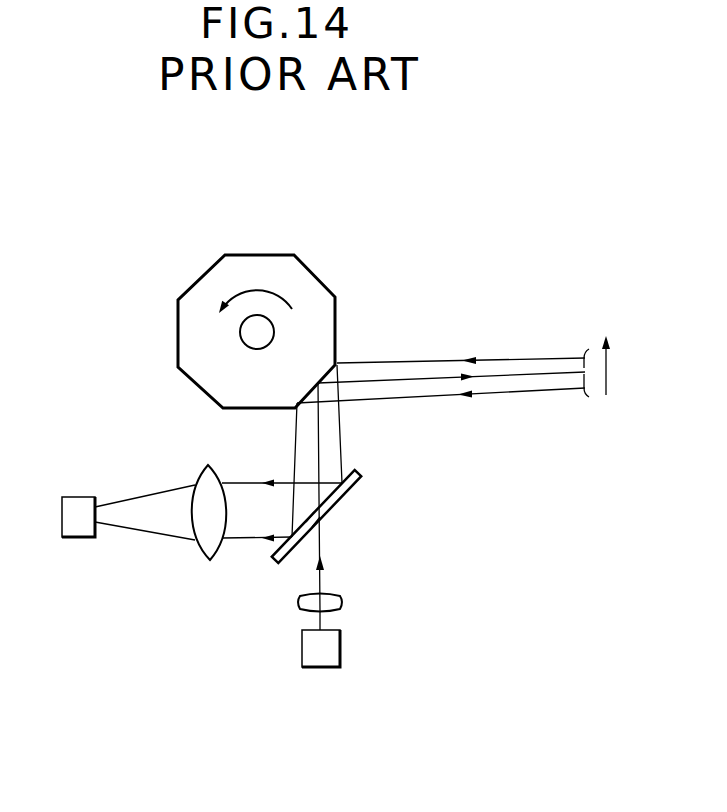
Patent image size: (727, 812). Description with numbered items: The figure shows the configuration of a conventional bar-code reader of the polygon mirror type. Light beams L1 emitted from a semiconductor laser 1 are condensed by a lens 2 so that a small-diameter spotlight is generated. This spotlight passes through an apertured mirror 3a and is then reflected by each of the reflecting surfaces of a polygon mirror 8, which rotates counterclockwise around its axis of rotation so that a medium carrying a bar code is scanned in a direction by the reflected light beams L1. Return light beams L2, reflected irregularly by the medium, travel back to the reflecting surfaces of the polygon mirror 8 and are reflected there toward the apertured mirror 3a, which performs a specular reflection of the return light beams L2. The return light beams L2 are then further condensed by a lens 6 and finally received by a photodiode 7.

The polygon mirror 8 is at (352, 302).
The light beams L1 is at (412, 377).
The return light beams L2 is at (518, 359).
The apertured mirror 3a is at (360, 489).
The photodiode 7 is at (75, 539).
The lens 6 is at (211, 562).
The lens 2 is at (343, 603).
The semiconductor laser 1 is at (341, 642).